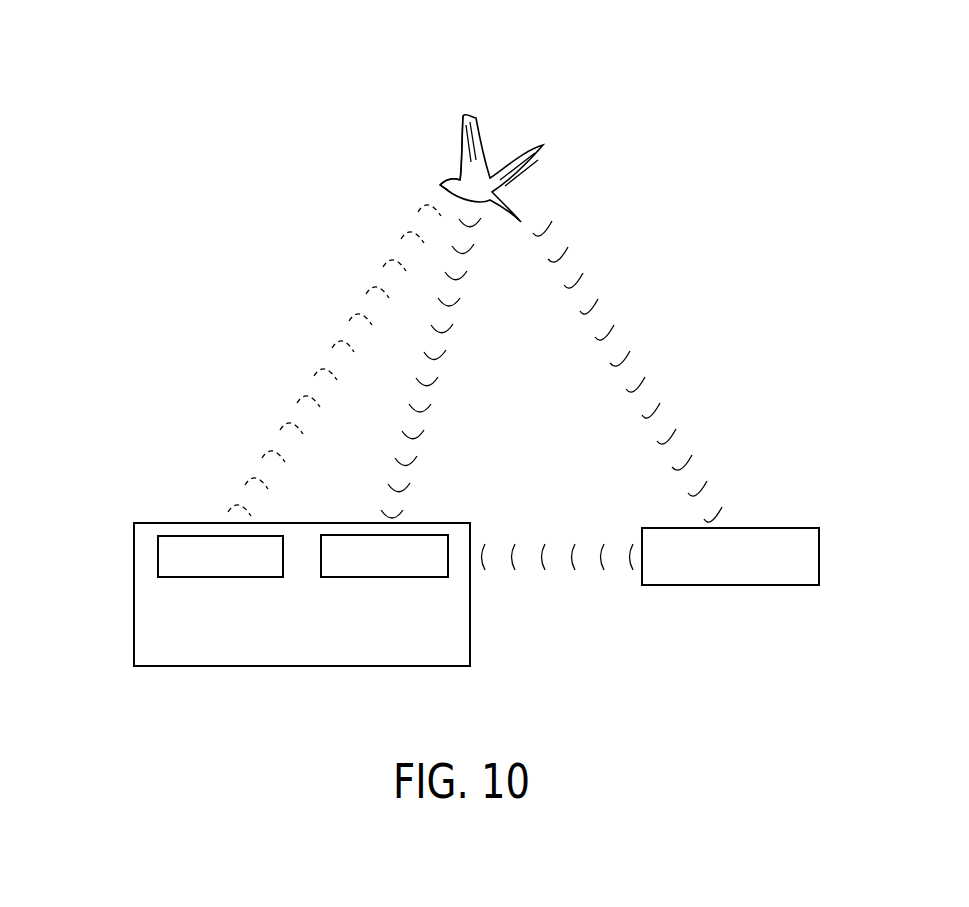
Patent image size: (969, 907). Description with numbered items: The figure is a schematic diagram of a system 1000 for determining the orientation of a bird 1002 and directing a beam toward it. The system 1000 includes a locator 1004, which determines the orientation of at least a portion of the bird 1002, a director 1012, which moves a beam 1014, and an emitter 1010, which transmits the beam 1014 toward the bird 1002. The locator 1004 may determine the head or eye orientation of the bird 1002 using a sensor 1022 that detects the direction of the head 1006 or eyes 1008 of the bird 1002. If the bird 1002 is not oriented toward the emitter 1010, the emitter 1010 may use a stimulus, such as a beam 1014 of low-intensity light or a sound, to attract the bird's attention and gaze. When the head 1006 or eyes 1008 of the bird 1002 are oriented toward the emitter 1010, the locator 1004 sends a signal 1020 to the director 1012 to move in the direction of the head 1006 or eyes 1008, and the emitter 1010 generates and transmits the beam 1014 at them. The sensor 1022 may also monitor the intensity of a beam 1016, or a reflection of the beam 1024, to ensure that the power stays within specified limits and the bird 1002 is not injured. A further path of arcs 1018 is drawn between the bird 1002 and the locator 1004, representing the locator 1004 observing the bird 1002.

The system 1000 is at (245, 88).
The bird 1002 is at (511, 160).
The locator 1004 is at (797, 528).
The head 1006 is at (452, 180).
The eyes 1008 is at (440, 182).
The emitter 1010 is at (134, 644).
The director 1012 is at (409, 578).
The beam 1014 is at (417, 462).
The beam 1016 is at (346, 342).
The bird signal to locator 1018 is at (647, 384).
The signal 1020 is at (569, 571).
The sensor 1022 is at (183, 535).
The reflection of the beam 1024 is at (309, 400).